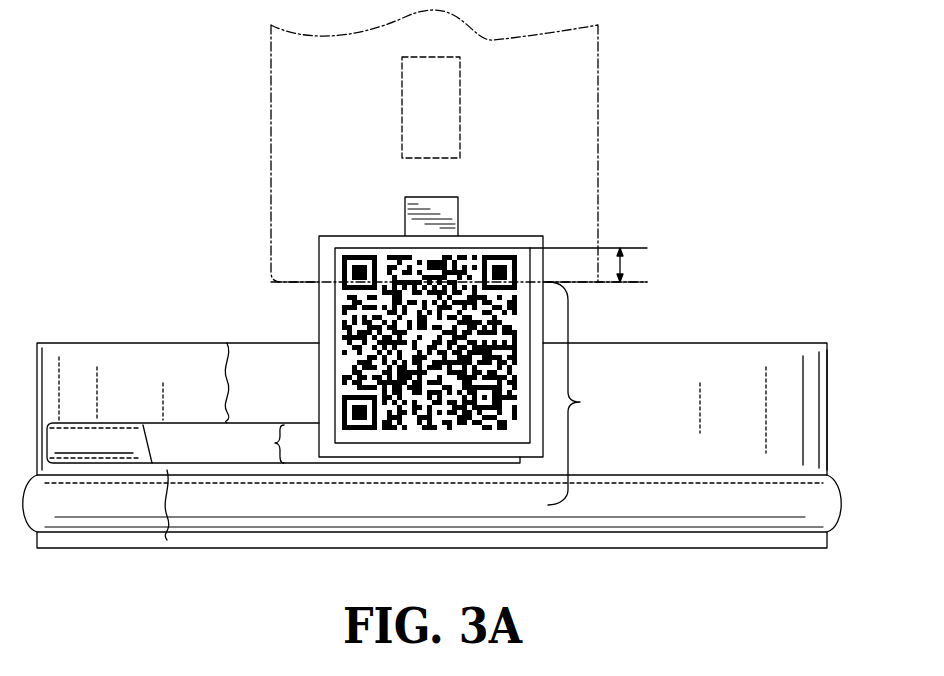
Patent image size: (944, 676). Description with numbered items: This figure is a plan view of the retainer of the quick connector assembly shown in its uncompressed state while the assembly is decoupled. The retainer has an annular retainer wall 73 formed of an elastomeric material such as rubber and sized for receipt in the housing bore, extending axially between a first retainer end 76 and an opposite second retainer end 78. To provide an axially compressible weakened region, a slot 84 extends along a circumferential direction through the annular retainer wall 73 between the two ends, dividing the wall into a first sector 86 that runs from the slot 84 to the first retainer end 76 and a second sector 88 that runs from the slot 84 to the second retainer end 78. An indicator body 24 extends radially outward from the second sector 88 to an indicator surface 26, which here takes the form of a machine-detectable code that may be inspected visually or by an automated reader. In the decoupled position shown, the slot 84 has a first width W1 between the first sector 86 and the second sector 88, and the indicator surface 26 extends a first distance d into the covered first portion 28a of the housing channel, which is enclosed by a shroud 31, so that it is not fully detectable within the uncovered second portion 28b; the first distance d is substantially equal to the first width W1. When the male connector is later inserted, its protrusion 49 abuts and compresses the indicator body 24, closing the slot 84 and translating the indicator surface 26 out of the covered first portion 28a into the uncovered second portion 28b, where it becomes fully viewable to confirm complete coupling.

The indicator body 24 is at (458, 218).
The indicator surface 26 is at (380, 315).
The covered first portion of the channel 28a is at (397, 146).
The shroud 31 is at (270, 203).
The uncovered second portion of the channel 28b is at (588, 393).
The protrusion 49 is at (402, 138).
The annular retainer wall 73 is at (827, 398).
The first retainer end 76 is at (757, 548).
The second retainer end 78 is at (827, 345).
The slot 84 is at (150, 435).
The first sector 86 is at (164, 505).
The second sector 88 is at (226, 385).
The first distance d is at (588, 265).
The first width W1 is at (260, 444).